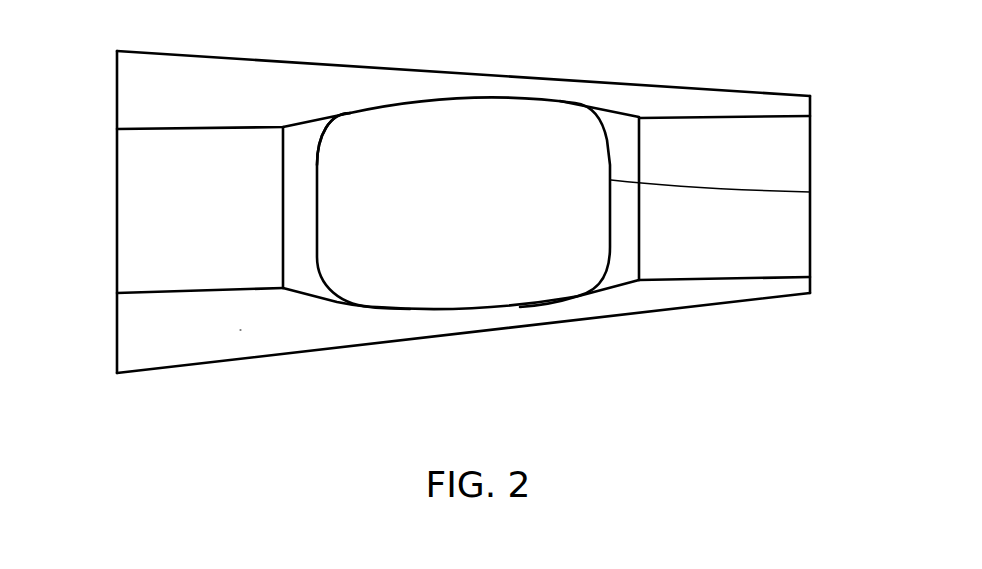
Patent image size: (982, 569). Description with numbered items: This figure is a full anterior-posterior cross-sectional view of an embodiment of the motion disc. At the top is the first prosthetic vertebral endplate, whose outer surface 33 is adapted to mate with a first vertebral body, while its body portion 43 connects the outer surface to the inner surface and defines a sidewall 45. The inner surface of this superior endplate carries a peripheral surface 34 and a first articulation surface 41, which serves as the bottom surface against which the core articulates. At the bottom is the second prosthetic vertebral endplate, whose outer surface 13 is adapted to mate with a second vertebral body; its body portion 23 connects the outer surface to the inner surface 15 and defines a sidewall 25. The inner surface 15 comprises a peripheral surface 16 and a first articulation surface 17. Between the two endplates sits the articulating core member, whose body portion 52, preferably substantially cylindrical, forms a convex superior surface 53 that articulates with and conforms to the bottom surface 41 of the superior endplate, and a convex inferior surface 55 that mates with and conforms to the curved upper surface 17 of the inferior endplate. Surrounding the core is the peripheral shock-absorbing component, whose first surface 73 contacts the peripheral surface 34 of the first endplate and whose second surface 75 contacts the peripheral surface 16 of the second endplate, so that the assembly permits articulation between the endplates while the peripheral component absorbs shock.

The outer surface 13 is at (473, 333).
The inner surface 15 is at (193, 293).
The peripheral surface 16 is at (225, 293).
The first articulation surface 17 is at (335, 304).
The body portion 23 is at (257, 343).
The sidewall 25 is at (117, 320).
The outer surface 33 is at (459, 70).
The peripheral surface 34 is at (723, 102).
The first articulation surface 41 is at (616, 110).
The body portion 43 is at (132, 76).
The sidewall 45 is at (117, 116).
The body portion 52 is at (810, 192).
The first articulation surface 53 is at (343, 116).
The second articulation surface 55 is at (582, 292).
The first surface 73 is at (790, 117).
The second surface 75 is at (790, 277).